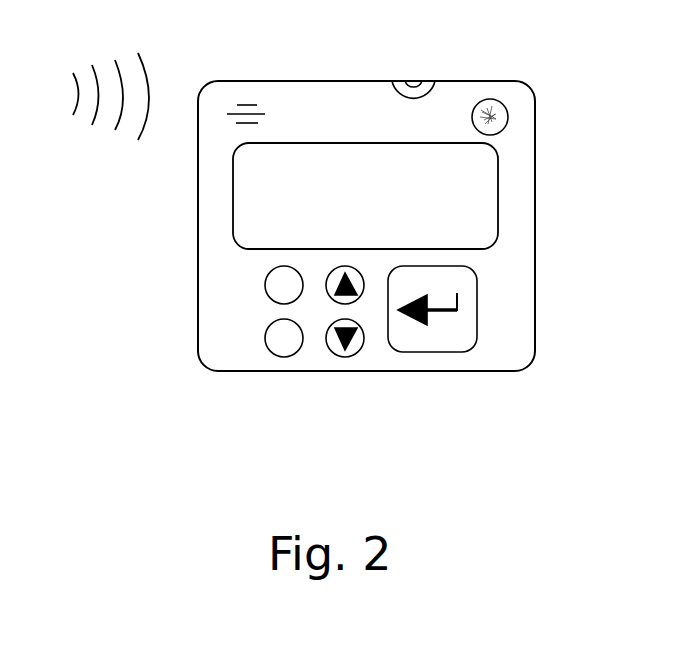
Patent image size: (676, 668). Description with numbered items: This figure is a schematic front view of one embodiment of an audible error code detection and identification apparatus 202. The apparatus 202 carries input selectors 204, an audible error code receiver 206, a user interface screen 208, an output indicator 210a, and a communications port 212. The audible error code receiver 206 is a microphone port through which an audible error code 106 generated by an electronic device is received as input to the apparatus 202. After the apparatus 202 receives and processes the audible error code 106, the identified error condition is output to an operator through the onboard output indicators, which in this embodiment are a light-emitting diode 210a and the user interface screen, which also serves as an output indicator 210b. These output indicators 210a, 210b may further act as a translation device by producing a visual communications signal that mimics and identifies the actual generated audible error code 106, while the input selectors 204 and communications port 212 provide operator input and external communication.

The audible error code 106 is at (130, 121).
The audible error code detection and identification apparatus 202 is at (198, 310).
The input selectors 204 is at (407, 352).
The audible error code receiver 206 is at (246, 100).
The user interface screen 208 is at (385, 193).
The output indicator 210a is at (490, 100).
The output indicator 210b is at (393, 223).
The communications port 212 is at (413, 83).